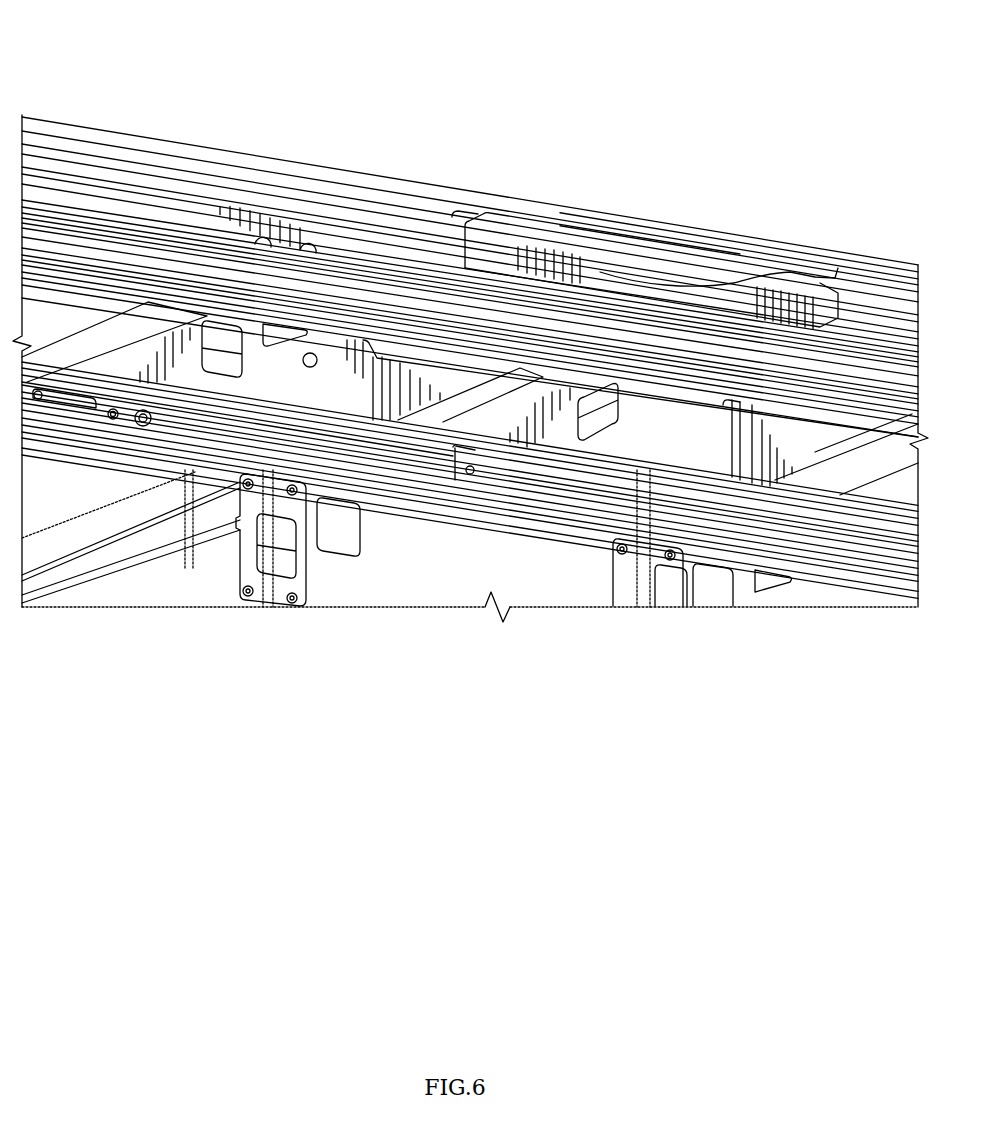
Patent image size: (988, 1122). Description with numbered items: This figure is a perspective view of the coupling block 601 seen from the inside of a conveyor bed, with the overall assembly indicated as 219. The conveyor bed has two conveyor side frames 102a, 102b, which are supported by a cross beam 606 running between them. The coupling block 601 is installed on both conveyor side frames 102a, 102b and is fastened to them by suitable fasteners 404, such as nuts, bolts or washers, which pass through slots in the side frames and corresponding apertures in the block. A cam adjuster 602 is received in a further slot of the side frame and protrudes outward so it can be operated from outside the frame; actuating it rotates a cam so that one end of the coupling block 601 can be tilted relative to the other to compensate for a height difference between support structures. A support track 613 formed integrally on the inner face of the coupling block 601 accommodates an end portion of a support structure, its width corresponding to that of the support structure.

The rack rail assembly 219 is at (467, 60).
The conveyor side frame 102a is at (400, 177).
The conveyor side frame 102b is at (485, 450).
The coupling block 601 is at (553, 232).
The cam adjuster 602 is at (143, 422).
The fasteners 404 is at (115, 415).
The cross beam 606 is at (177, 340).
The support track 613 is at (733, 283).